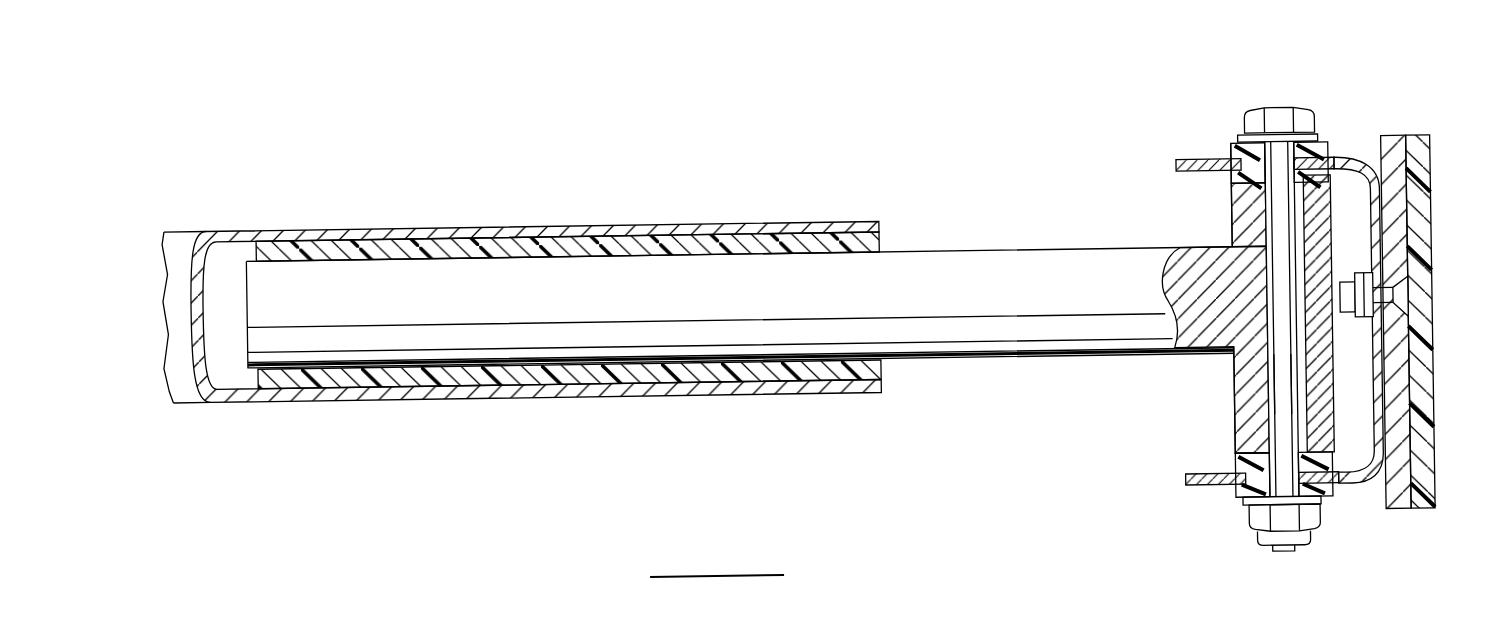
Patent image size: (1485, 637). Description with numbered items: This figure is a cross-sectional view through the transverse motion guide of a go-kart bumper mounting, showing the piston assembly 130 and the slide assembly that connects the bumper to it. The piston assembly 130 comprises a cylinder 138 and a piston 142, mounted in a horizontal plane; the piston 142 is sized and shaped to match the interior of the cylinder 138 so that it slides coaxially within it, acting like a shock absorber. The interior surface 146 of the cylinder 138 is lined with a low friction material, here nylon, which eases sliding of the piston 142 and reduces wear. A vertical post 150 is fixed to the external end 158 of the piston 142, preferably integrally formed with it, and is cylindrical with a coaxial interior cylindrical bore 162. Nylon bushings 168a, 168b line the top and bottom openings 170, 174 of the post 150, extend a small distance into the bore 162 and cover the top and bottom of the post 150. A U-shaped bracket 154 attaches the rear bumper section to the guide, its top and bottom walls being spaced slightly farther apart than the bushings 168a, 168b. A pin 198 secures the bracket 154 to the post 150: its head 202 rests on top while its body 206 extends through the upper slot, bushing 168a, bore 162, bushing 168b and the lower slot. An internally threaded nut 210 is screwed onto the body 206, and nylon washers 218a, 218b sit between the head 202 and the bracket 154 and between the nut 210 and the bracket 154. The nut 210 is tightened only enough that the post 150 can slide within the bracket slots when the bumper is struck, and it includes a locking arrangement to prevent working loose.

The piston assembly 130 is at (902, 149).
The cylinder 138 is at (334, 219).
The piston 142 is at (986, 248).
The interior surface 146 is at (769, 366).
The post 150 is at (1256, 412).
The bracket 154 is at (1376, 384).
The external end 158 is at (1192, 253).
The interior cylindrical bore 162 is at (1258, 430).
The bushing 168a is at (1332, 160).
The bushing 168b is at (1240, 472).
The top opening 170 is at (1318, 204).
The bottom opening 174 is at (1323, 434).
The pin 198 is at (1274, 270).
The head 202 is at (1283, 115).
The body 206 is at (1276, 374).
The nut 210 is at (1257, 524).
The washer 218a is at (1328, 165).
The washer 218b is at (1317, 500).